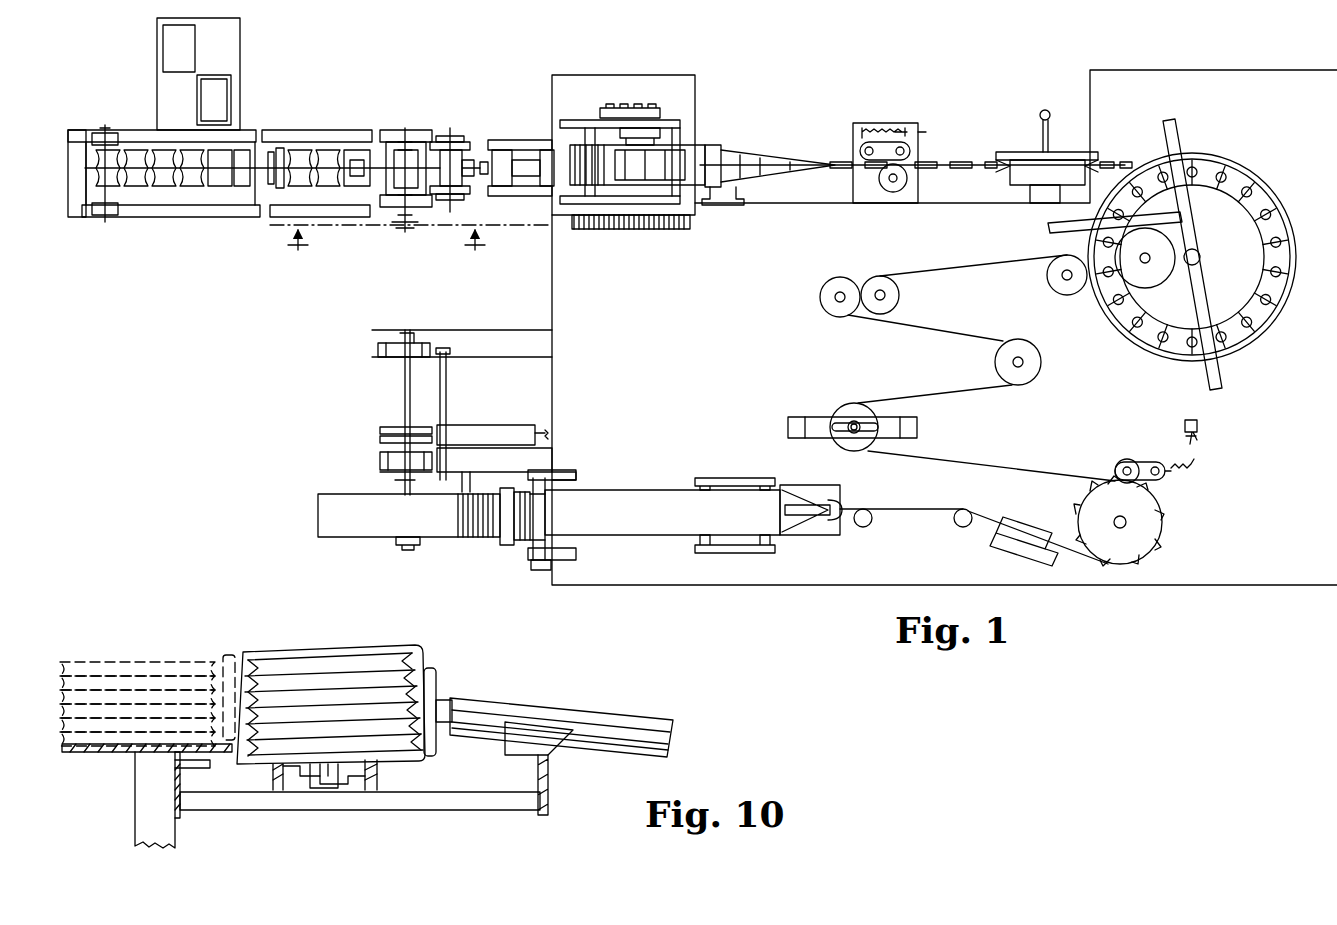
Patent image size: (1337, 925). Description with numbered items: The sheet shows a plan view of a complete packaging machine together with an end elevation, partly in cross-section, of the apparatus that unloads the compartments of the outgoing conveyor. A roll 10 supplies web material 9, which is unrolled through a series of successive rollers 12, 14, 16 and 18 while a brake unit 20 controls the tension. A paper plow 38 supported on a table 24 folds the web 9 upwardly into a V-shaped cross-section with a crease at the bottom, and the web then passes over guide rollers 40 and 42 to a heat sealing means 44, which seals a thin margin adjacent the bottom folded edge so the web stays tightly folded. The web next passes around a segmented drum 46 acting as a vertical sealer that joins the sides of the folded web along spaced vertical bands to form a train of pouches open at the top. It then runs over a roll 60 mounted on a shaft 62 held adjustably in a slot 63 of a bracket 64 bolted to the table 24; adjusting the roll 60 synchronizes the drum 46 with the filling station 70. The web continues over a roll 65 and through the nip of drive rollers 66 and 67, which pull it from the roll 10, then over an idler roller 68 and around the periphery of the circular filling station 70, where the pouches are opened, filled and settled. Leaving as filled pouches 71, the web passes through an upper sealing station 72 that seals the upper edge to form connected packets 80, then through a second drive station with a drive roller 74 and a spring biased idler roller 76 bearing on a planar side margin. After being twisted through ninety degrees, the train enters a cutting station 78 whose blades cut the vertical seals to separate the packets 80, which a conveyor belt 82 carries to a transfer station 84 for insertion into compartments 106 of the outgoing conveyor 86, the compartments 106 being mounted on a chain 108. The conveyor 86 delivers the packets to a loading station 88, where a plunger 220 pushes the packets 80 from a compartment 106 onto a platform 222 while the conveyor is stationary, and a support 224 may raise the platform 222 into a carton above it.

In FIG. 1, the web material 9 is at (645, 495).
In FIG. 1, the roll 10 is at (340, 494).
In FIG. 1, the roller 12 is at (503, 528).
In FIG. 1, the roller 14 is at (520, 540).
In FIG. 1, the roller 16 is at (536, 552).
In FIG. 1, the roller 18 is at (560, 486).
In FIG. 1, the brake unit 20 is at (385, 426).
In FIG. 1, the table 24 is at (680, 414).
In FIG. 1, the paper plow 38 is at (808, 494).
In FIG. 1, the guide roller 40 is at (863, 527).
In FIG. 1, the guide roller 42 is at (960, 528).
In FIG. 1, the heat sealing means 44 is at (1022, 543).
In FIG. 1, the segmented drum 46 is at (1162, 527).
In FIG. 1, the roll 60 is at (856, 410).
In FIG. 1, the shaft 62 is at (855, 435).
In FIG. 1, the slot 63 is at (840, 424).
In FIG. 1, the bracket 64 is at (917, 429).
In FIG. 1, the roll 65 is at (995, 366).
In FIG. 1, the drive roller 66 is at (898, 300).
In FIG. 1, the drive roller 67 is at (825, 289).
In FIG. 1, the idler roller 68 is at (1068, 295).
In FIG. 1, the filling station 70 is at (1230, 158).
In FIG. 1, the filled pouches 71 is at (972, 170).
In FIG. 1, the upper sealing station 72 is at (1010, 152).
In FIG. 1, the drive roller 74 is at (893, 193).
In FIG. 1, the spring biased idler roller 76 is at (892, 142).
In FIG. 1, the cutting station 78 is at (682, 125).
In FIG. 1, the packets 80 is at (546, 182).
In FIG. 1, the conveyor belt 82 is at (472, 150).
In FIG. 1, the transfer station 84 is at (408, 130).
In FIG. 1, the conveyor 86 is at (360, 208).
In FIG. 1, the loading station 88 is at (243, 128).
In FIG. 10, the loading station 88 is at (132, 657).
In FIG. 10, the compartments 106 is at (418, 660).
In FIG. 10, the chain 108 is at (328, 790).
In FIG. 10, the plunger 220 is at (537, 705).
In FIG. 10, the platform 222 is at (103, 753).
In FIG. 10, the support 224 is at (175, 832).